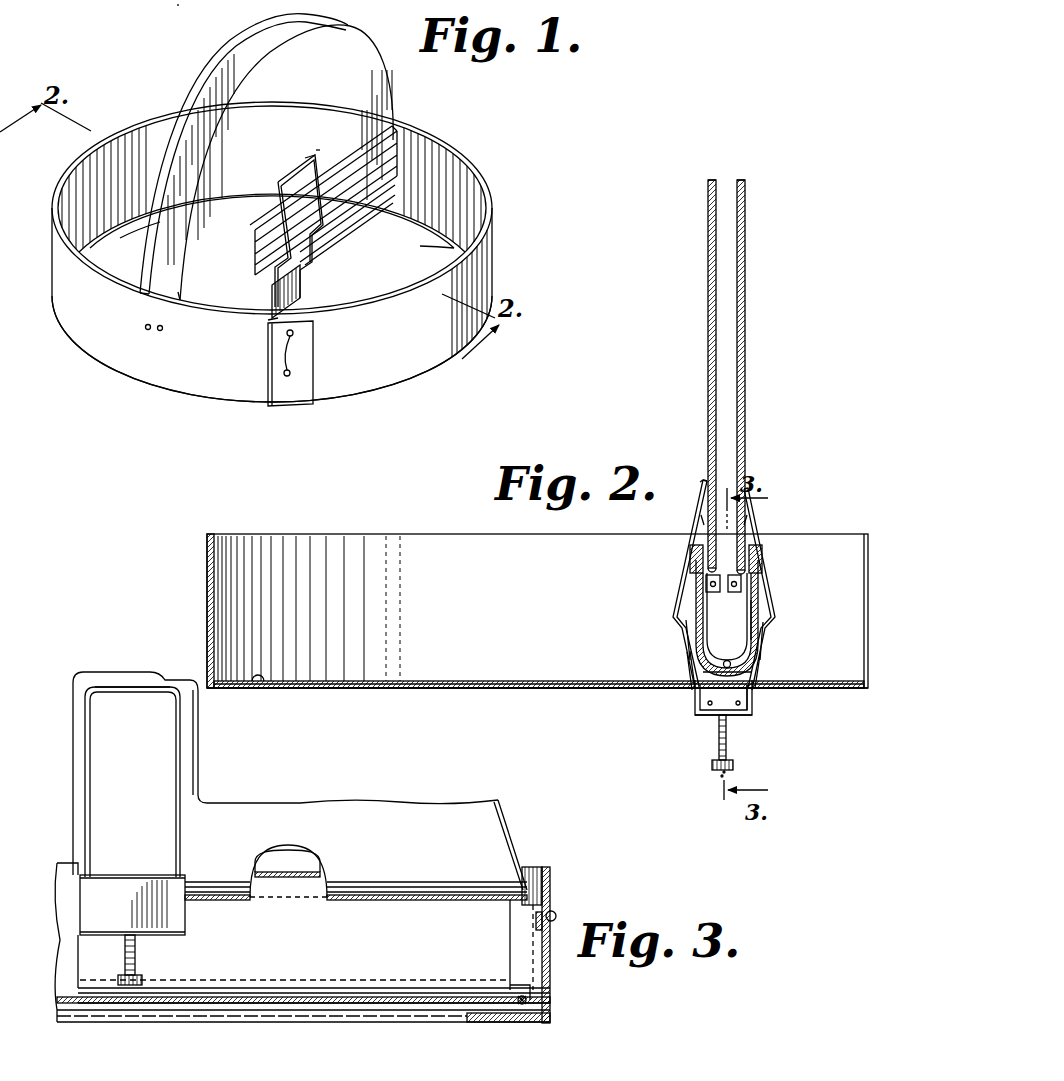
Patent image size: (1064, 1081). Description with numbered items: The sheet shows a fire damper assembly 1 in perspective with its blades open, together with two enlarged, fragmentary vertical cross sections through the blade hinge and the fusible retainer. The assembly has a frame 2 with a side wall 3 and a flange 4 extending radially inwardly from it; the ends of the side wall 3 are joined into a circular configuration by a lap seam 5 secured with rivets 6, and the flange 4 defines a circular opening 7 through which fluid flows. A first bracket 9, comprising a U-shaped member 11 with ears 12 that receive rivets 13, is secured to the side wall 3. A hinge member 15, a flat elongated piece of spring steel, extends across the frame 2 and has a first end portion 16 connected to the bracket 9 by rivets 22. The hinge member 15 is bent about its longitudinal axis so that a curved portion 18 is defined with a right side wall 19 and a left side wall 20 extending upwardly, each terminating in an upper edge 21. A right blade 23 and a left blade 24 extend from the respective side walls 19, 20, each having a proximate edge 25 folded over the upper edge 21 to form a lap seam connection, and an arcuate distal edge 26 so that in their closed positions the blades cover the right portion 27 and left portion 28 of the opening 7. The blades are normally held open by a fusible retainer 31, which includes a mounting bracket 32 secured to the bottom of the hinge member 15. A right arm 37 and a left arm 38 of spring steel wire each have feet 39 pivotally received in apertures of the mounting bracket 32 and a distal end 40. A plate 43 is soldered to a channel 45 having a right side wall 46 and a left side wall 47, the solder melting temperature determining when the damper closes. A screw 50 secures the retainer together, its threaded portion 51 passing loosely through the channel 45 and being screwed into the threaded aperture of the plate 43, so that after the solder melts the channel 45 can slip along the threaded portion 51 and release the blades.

In FIG. 1, the damper assembly 1 is at (199, 22).
In FIG. 1, the frame 2 is at (430, 132).
In FIG. 2, the frame 2 is at (207, 548).
In FIG. 3, the frame 2 is at (545, 867).
In FIG. 1, the side wall 3 is at (368, 366).
In FIG. 2, the side wall 3 is at (537, 643).
In FIG. 3, the side wall 3 is at (57, 940).
In FIG. 1, the flange 4 is at (138, 230).
In FIG. 2, the flange 4 is at (257, 680).
In FIG. 3, the flange 4 is at (505, 1016).
In FIG. 1, the lap seam 5 is at (270, 378).
In FIG. 1, the rivets 6 is at (297, 343).
In FIG. 1, the circular opening 7 is at (410, 238).
In FIG. 2, the circular opening 7 is at (545, 686).
In FIG. 3, the circular opening 7 is at (240, 1013).
In FIG. 2, the first bracket 9 is at (765, 582).
In FIG. 3, the first bracket 9 is at (508, 886).
In FIG. 2, the U-shaped member 11 is at (760, 632).
In FIG. 3, the U-shaped member 11 is at (508, 946).
In FIG. 3, the ears 12 is at (552, 906).
In FIG. 2, the rivets 13 is at (734, 598).
In FIG. 3, the rivets 13 is at (528, 920).
In FIG. 1, the hinge member 15 is at (330, 255).
In FIG. 2, the hinge member 15 is at (690, 626).
In FIG. 3, the hinge member 15 is at (60, 998).
In FIG. 1, the first end portion 16 is at (393, 178).
In FIG. 3, the first end portion 16 is at (545, 1001).
In FIG. 1, the curved portion 18 is at (335, 235).
In FIG. 2, the curved portion 18 is at (750, 670).
In FIG. 3, the curved portion 18 is at (375, 1000).
In FIG. 1, the right side wall 19 is at (342, 215).
In FIG. 2, the right side wall 19 is at (755, 606).
In FIG. 2, the left side wall 20 is at (690, 587).
In FIG. 3, the left side wall 20 is at (314, 956).
In FIG. 2, the upper edge 21 is at (700, 530).
In FIG. 3, the upper edge 21 is at (262, 858).
In FIG. 3, the rivets 22 is at (520, 985).
In FIG. 1, the right blade 23 is at (352, 26).
In FIG. 2, the right blade 23 is at (746, 258).
In FIG. 3, the right blade 23 is at (275, 800).
In FIG. 1, the left blade 24 is at (200, 88).
In FIG. 2, the left blade 24 is at (708, 282).
In FIG. 1, the proximate edge 25 is at (225, 262).
In FIG. 2, the proximate edge 25 is at (696, 562).
In FIG. 3, the proximate edge 25 is at (322, 853).
In FIG. 1, the distal edge 26 is at (245, 62).
In FIG. 2, the distal edge 26 is at (714, 178).
In FIG. 3, the distal edge 26 is at (506, 828).
In FIG. 1, the right portion 27 is at (440, 262).
In FIG. 1, the left portion 28 is at (98, 252).
In FIG. 2, the left portion 28 is at (292, 682).
In FIG. 3, the left portion 28 is at (462, 1014).
In FIG. 1, the fusible retainer 31 is at (318, 150).
In FIG. 2, the fusible retainer 31 is at (690, 722).
In FIG. 2, the mounting bracket 32 is at (700, 700).
In FIG. 1, the right arm 37 is at (277, 186).
In FIG. 2, the right arm 37 is at (755, 515).
In FIG. 3, the right arm 37 is at (78, 760).
In FIG. 2, the left arm 38 is at (703, 493).
In FIG. 2, the feet 39 is at (752, 705).
In FIG. 1, the distal end 40 is at (307, 158).
In FIG. 3, the distal end 40 is at (115, 672).
In FIG. 2, the plate 43 is at (727, 718).
In FIG. 1, the channel 45 is at (312, 270).
In FIG. 1, the right side wall 46 is at (290, 297).
In FIG. 2, the right side wall 46 is at (760, 656).
In FIG. 3, the right side wall 46 is at (195, 872).
In FIG. 2, the left side wall 47 is at (690, 661).
In FIG. 2, the screw 50 is at (733, 765).
In FIG. 3, the screw 50 is at (140, 978).
In FIG. 1, the threaded portion 51 is at (273, 322).